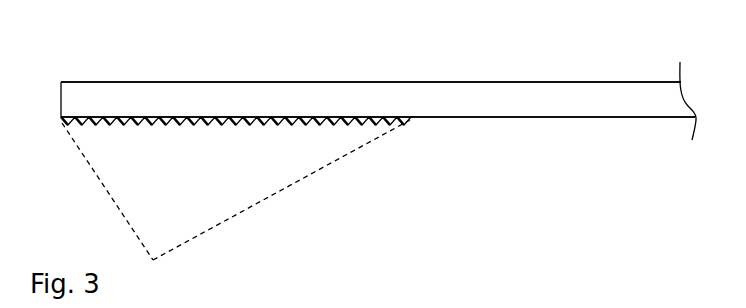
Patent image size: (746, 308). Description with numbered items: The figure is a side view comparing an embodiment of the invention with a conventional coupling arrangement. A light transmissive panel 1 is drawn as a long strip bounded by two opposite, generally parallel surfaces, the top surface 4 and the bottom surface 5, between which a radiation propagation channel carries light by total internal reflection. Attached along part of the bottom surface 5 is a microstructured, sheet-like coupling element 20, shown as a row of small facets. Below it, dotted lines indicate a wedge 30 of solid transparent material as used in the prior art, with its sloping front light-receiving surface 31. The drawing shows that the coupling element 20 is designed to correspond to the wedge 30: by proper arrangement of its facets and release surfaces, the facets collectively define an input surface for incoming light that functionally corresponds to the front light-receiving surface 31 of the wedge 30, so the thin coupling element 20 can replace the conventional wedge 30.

The light transmissive panel 1 is at (112, 82).
The top surface 4 is at (243, 82).
The bottom surface 5 is at (462, 118).
The coupling element 20 is at (326, 121).
The wedge 30 is at (267, 198).
The front light-receiving surface 31 is at (112, 197).